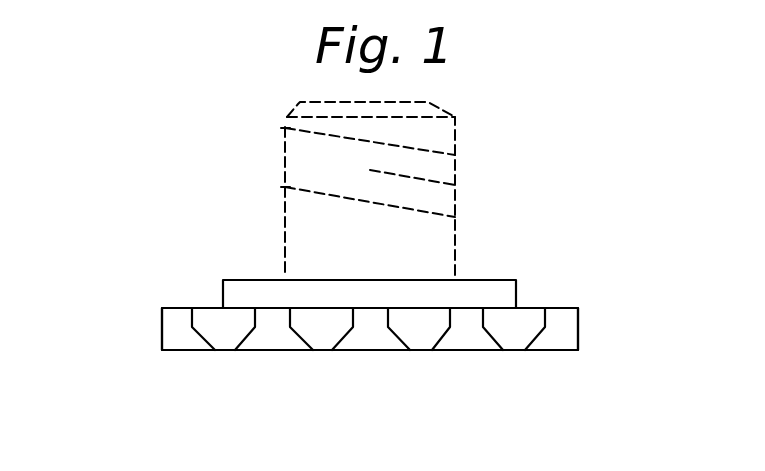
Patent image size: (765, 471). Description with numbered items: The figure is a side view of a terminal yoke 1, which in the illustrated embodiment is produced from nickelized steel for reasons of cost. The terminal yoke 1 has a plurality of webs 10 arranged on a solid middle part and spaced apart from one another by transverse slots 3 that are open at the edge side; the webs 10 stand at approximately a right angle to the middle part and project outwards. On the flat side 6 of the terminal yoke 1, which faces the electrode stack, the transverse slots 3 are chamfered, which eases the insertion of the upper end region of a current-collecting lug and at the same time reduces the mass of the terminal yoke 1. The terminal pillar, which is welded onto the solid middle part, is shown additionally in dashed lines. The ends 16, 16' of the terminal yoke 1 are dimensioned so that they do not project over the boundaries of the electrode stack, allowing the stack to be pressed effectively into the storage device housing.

The terminal yoke 1 is at (150, 334).
The transverse slot 3 is at (272, 330).
The flat side 6 is at (539, 305).
The web 10 is at (317, 313).
The end of the terminal yoke 16 is at (107, 327).
The end of the terminal yoke 16' is at (640, 329).